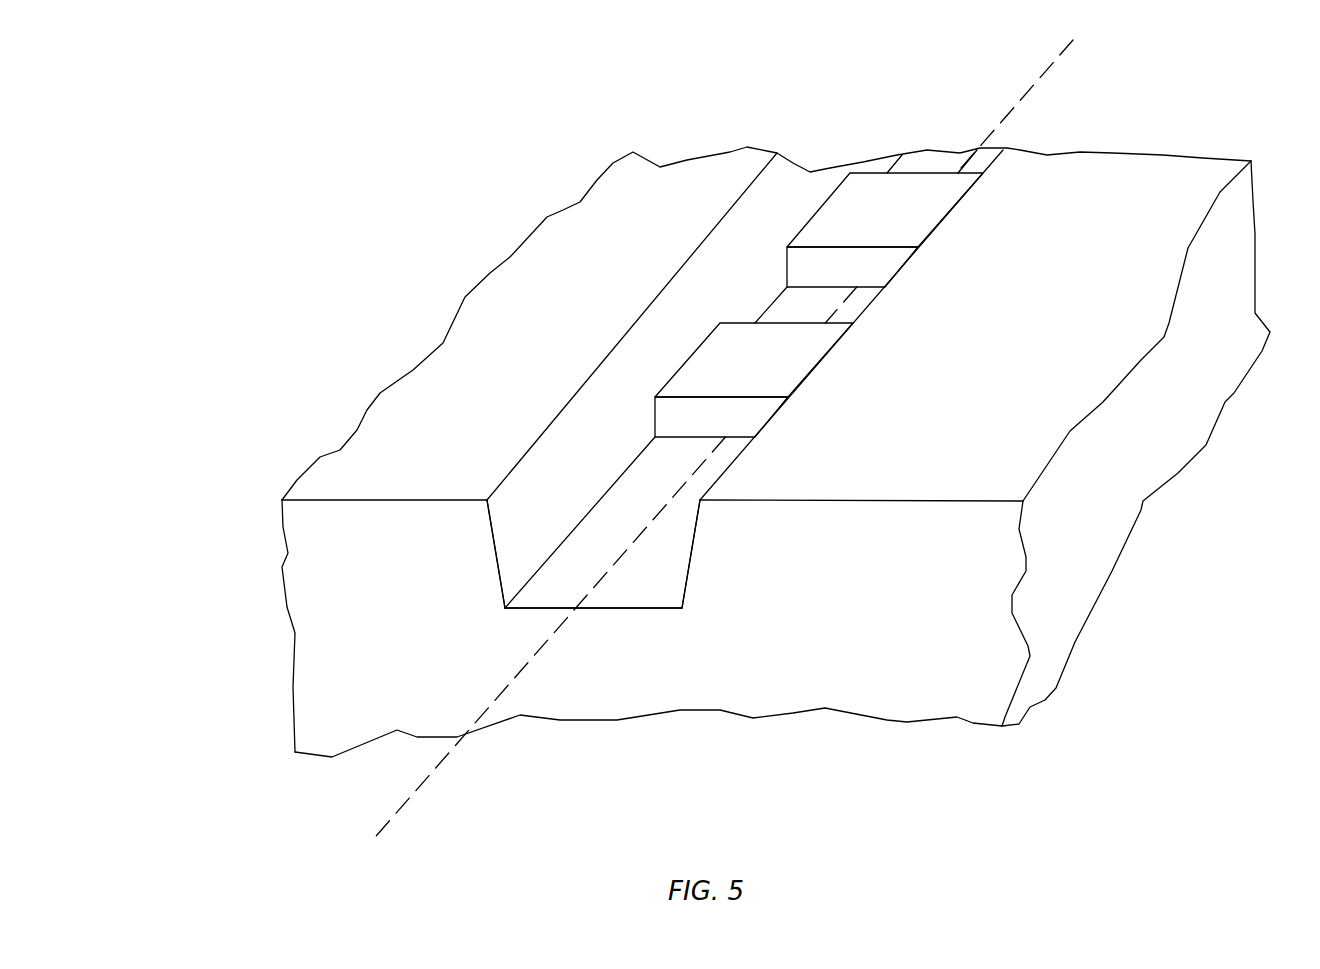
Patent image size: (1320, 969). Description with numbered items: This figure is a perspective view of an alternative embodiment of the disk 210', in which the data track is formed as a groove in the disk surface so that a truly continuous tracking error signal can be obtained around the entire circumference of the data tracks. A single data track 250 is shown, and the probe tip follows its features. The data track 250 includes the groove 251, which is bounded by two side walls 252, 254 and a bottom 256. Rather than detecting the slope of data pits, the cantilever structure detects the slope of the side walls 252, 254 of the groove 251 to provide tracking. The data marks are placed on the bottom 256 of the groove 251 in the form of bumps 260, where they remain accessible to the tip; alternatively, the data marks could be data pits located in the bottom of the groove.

The disk 210' is at (776, 507).
The data track 250 is at (1057, 58).
The groove 251 is at (615, 407).
The side wall 252 is at (547, 418).
The side wall 254 is at (819, 458).
The bottom 256 is at (623, 598).
The bumps 260 is at (805, 342).